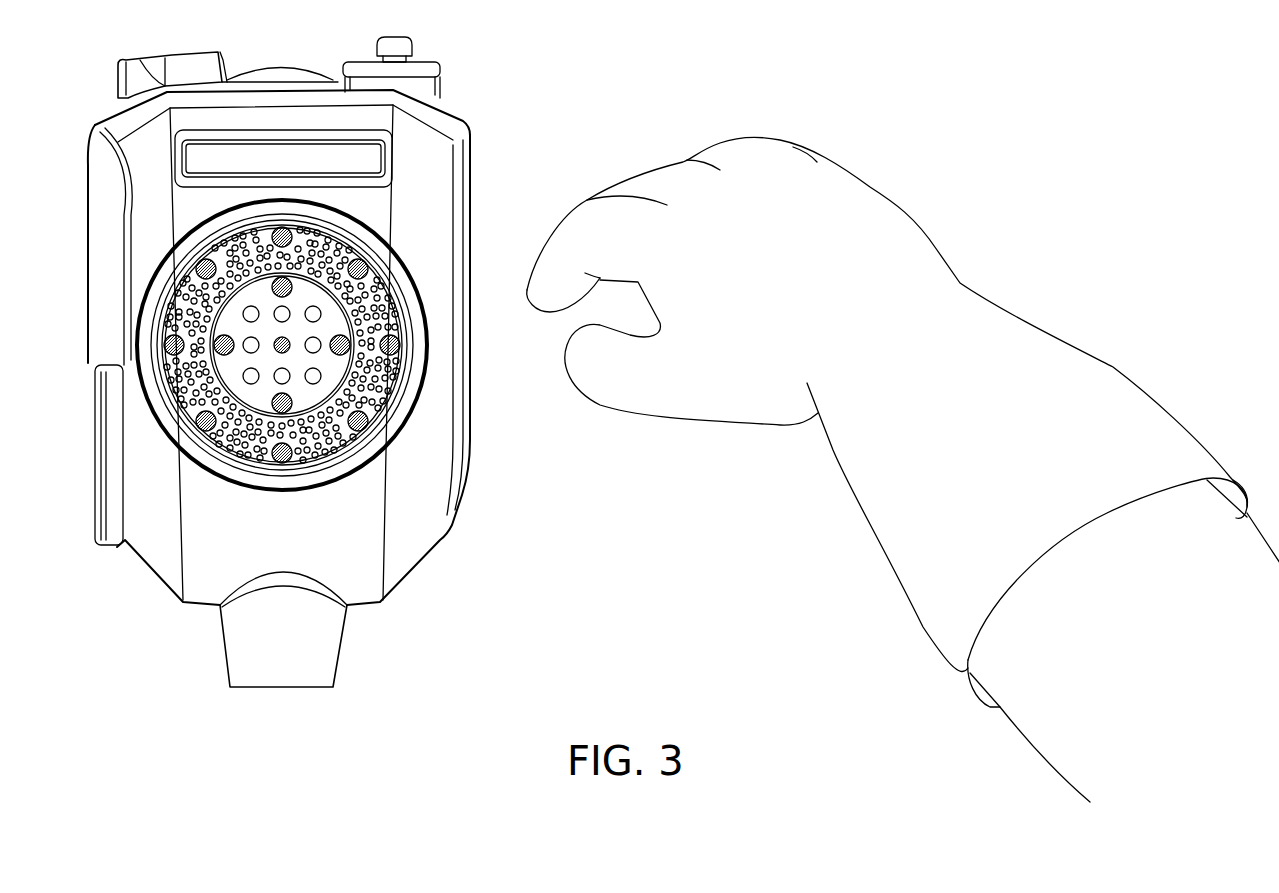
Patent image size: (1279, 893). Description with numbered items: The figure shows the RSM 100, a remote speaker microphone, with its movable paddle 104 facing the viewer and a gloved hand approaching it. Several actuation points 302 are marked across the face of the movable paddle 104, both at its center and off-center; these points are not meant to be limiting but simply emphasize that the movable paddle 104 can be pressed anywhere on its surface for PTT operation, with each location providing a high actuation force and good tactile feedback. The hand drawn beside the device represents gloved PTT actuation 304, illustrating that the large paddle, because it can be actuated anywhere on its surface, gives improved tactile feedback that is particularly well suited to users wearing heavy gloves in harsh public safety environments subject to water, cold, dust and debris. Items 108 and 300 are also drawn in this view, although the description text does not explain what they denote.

The RSM 100 is at (284, 362).
The movable paddle 104 is at (333, 367).
The speaker grille holes 108 is at (245, 445).
The operating scenario 300 is at (523, 676).
The actuation points 302 is at (200, 268).
The gloved PTT actuation 304 is at (913, 217).